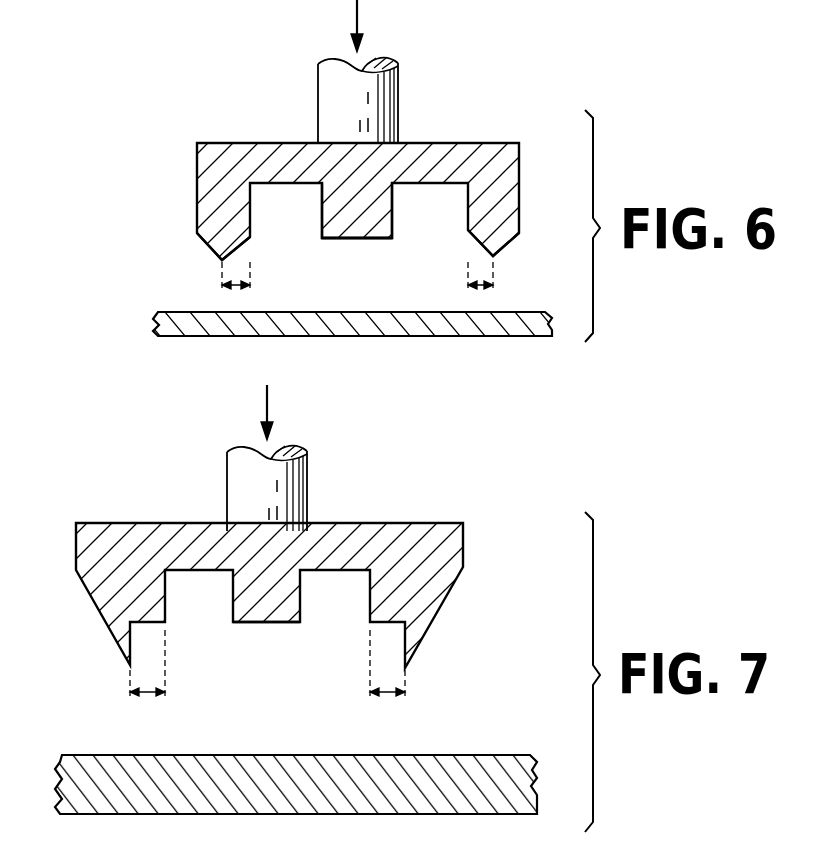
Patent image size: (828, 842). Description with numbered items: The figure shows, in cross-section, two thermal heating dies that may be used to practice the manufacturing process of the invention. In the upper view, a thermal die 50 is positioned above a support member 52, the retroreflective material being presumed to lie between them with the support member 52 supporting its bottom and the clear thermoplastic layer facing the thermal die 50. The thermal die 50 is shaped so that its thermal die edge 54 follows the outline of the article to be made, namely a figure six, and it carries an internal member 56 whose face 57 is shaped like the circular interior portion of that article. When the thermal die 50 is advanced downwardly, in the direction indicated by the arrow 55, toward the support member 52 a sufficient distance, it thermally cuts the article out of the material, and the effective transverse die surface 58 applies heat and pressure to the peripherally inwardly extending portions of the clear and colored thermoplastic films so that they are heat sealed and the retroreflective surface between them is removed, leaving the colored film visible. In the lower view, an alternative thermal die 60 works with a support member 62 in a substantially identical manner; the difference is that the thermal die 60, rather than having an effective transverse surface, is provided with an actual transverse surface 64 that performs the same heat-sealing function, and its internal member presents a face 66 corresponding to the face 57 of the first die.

In FIG. 6, the thermal die 50 is at (477, 106).
In FIG. 6, the support member 52 is at (560, 327).
In FIG. 6, the thermal die edge 54 is at (205, 243).
In FIG. 6, the punching force direction 55 is at (360, 24).
In FIG. 6, the internal member 56 is at (394, 217).
In FIG. 6, the face 57 is at (342, 240).
In FIG. 6, the effective transverse die surface 58 is at (238, 306).
In FIG. 7, the thermal die 60 is at (516, 517).
In FIG. 7, the support member 62 is at (473, 756).
In FIG. 7, the actual transverse surface 64 is at (148, 702).
In FIG. 7, the central tooth bottom face 66 is at (273, 622).